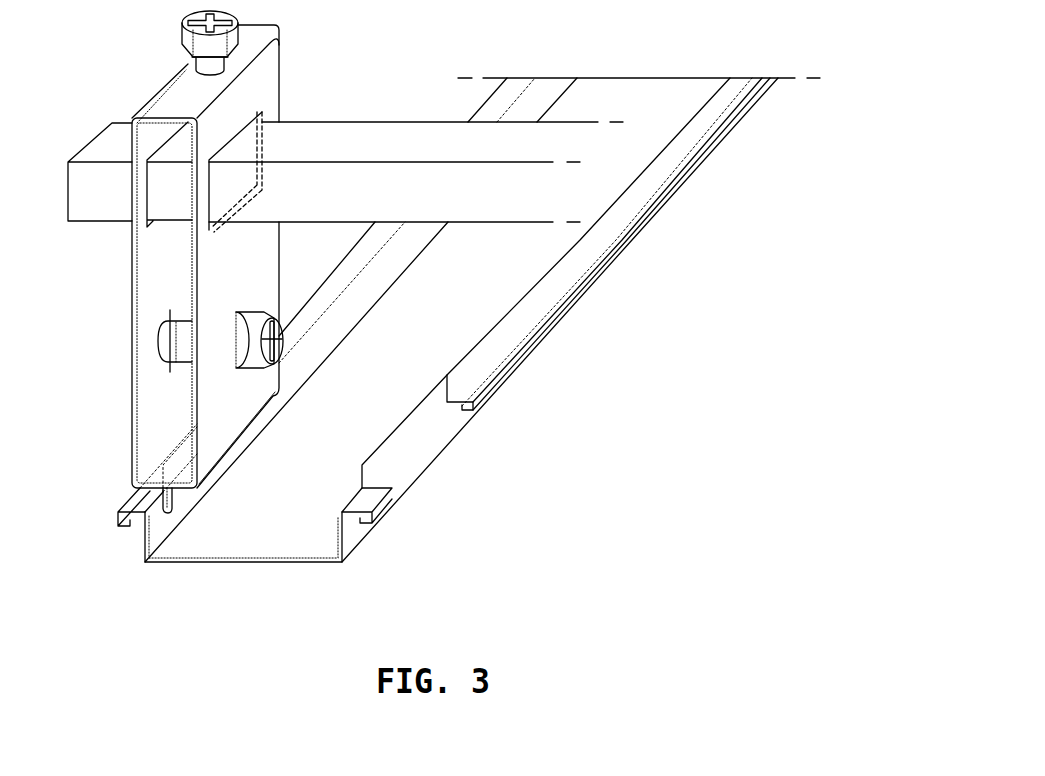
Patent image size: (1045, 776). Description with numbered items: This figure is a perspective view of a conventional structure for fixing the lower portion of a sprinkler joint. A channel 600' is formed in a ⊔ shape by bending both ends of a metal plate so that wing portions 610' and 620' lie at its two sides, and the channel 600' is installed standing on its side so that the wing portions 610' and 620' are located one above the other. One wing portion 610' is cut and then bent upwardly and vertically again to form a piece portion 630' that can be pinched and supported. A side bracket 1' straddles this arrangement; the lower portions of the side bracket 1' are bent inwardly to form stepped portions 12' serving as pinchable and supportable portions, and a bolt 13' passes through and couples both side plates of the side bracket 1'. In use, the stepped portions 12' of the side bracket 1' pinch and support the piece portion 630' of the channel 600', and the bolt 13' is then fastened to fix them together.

The side bracket 1' is at (234, 249).
The stepped portions 12' is at (129, 479).
The bolt 13' is at (181, 326).
The channel 600' is at (432, 344).
The wing portion 610' is at (97, 507).
The wing portion 620' is at (556, 300).
The piece portion 630' is at (396, 285).